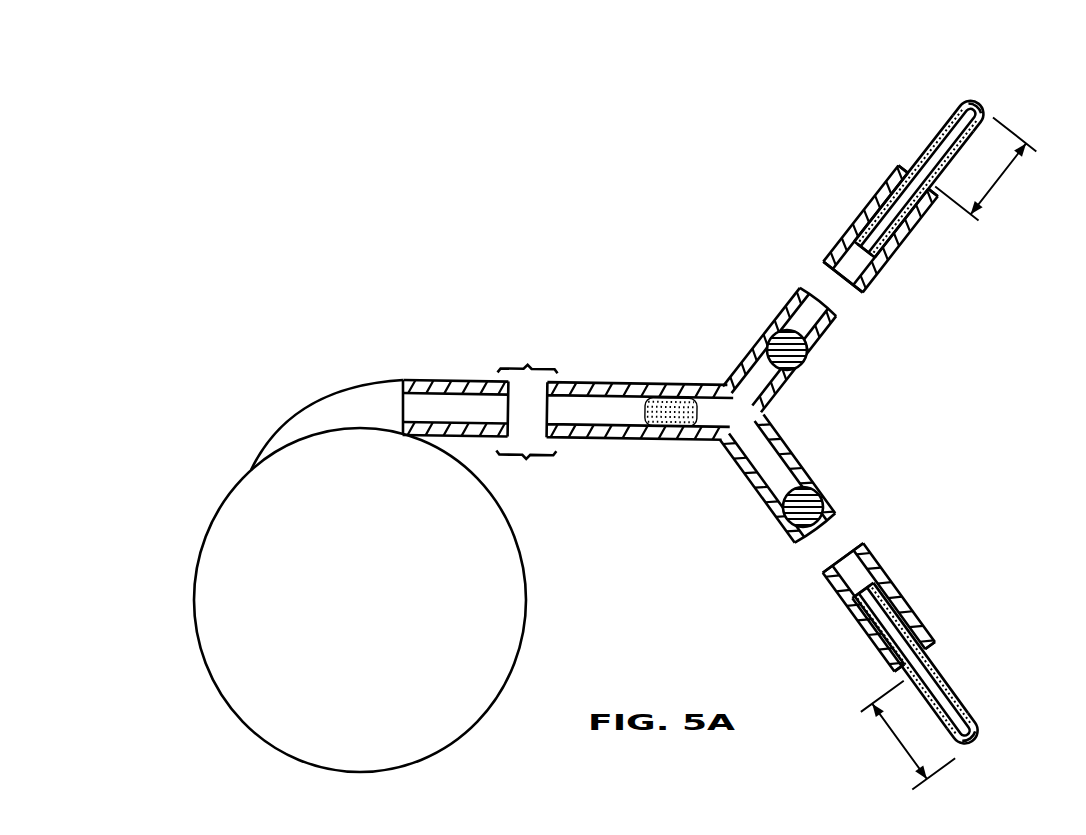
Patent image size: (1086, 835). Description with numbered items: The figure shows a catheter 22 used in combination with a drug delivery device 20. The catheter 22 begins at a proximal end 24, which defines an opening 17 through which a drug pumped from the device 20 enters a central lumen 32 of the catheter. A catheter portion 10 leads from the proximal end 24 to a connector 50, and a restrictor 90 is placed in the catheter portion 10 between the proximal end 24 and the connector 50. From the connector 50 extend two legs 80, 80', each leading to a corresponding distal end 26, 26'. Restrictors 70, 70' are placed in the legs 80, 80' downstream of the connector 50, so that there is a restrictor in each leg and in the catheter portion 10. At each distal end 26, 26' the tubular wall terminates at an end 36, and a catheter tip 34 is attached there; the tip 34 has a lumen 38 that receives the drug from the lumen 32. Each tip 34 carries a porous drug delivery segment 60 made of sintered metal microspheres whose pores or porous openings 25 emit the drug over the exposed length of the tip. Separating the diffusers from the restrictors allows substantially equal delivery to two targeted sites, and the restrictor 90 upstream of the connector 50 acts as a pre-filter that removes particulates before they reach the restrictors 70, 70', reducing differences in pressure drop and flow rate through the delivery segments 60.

The catheter portion 10 is at (641, 438).
The opening 17 is at (400, 406).
The device 20 is at (188, 657).
The catheter 22 is at (473, 436).
The proximal end 24 is at (474, 394).
The porous openings 25 is at (985, 113).
The distal end 26 is at (927, 666).
The distal end 26' is at (929, 167).
The central lumen 32 is at (848, 258).
The catheter tip 34 is at (976, 107).
The end 36 is at (895, 177).
The lumen 38 is at (893, 240).
The connector 50 is at (787, 415).
The drug delivery segment 60 is at (940, 125).
The restrictor 70 is at (833, 501).
The restrictor 70' is at (747, 335).
The leg 80 is at (801, 477).
The leg 80' is at (806, 351).
The restrictor 90 is at (640, 406).